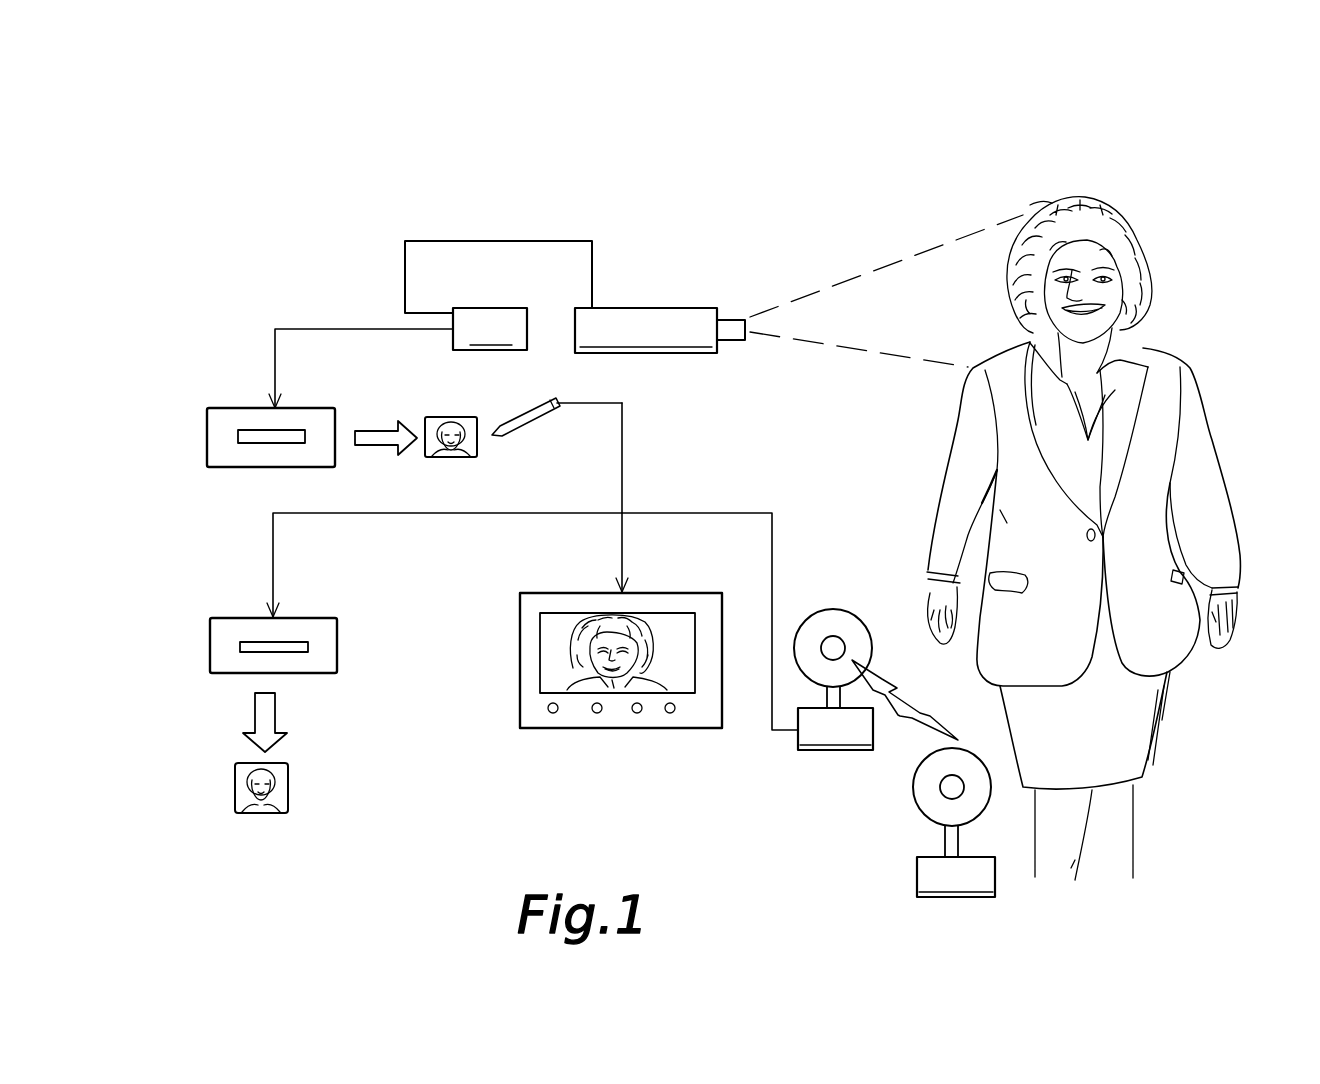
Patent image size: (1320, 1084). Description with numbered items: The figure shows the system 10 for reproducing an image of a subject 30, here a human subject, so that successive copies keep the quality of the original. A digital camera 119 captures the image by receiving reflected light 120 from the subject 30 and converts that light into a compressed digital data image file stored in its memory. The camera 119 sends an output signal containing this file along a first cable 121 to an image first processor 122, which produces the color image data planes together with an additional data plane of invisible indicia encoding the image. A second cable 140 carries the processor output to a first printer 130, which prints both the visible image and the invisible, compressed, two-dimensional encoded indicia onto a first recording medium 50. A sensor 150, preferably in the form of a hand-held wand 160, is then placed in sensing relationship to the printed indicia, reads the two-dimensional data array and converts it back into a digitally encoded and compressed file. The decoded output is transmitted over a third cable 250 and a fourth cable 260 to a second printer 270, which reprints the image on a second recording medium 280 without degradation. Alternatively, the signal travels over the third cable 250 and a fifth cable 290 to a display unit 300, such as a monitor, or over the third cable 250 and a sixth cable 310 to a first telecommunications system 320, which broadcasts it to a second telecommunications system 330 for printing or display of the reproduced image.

The system 10 is at (763, 160).
The subject 30 is at (1165, 360).
The first recording medium 50 is at (462, 417).
The digital camera 119 is at (677, 318).
The reflected light 120 is at (888, 265).
The first cable 121 is at (537, 241).
The image first processor 122 is at (505, 316).
The first printer 130 is at (223, 408).
The second cable 140 is at (366, 329).
The sensor 150 is at (513, 436).
The hand-held wand 160 is at (543, 391).
The third cable 250 is at (622, 478).
The fourth cable 260 is at (430, 513).
The second printer 270 is at (228, 622).
The second recording medium 280 is at (290, 790).
The fifth cable 290 is at (622, 545).
The display unit 300 is at (663, 730).
The sixth cable 310 is at (772, 540).
The first telecommunications system 320 is at (835, 622).
The second telecommunications system 330 is at (918, 810).